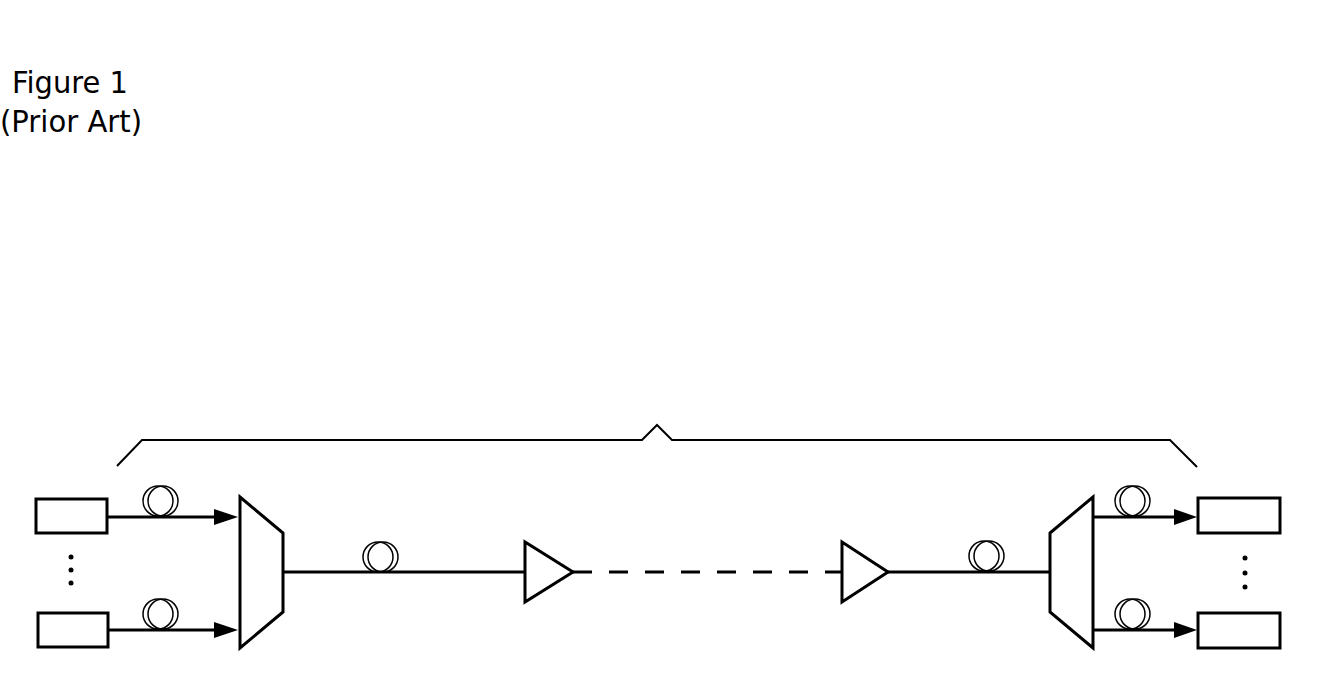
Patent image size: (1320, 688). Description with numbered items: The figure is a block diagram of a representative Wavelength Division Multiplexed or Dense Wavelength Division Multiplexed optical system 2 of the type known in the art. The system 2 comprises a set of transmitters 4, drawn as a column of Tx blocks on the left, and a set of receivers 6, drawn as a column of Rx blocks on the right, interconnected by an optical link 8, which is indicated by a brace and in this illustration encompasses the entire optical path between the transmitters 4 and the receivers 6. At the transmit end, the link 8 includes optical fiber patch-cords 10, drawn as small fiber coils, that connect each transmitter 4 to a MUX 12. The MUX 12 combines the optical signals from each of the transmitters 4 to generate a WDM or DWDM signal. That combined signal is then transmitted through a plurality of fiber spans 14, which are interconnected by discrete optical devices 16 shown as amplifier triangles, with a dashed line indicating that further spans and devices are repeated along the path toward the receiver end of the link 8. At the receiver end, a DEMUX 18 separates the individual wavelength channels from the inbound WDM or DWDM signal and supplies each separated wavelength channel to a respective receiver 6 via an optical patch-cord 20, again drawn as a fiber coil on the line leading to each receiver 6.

The optical system 2 is at (1078, 356).
The transmitters 4 is at (85, 498).
The receivers 6 is at (1243, 498).
The optical link 8 is at (657, 431).
The optical fiber patch-cords 10 is at (183, 517).
The MUX 12 is at (268, 624).
The fiber spans 14 is at (418, 571).
The discrete optical devices 16 is at (549, 550).
The DEMUX 18 is at (1062, 622).
The optical patch-cord 20 is at (1128, 518).